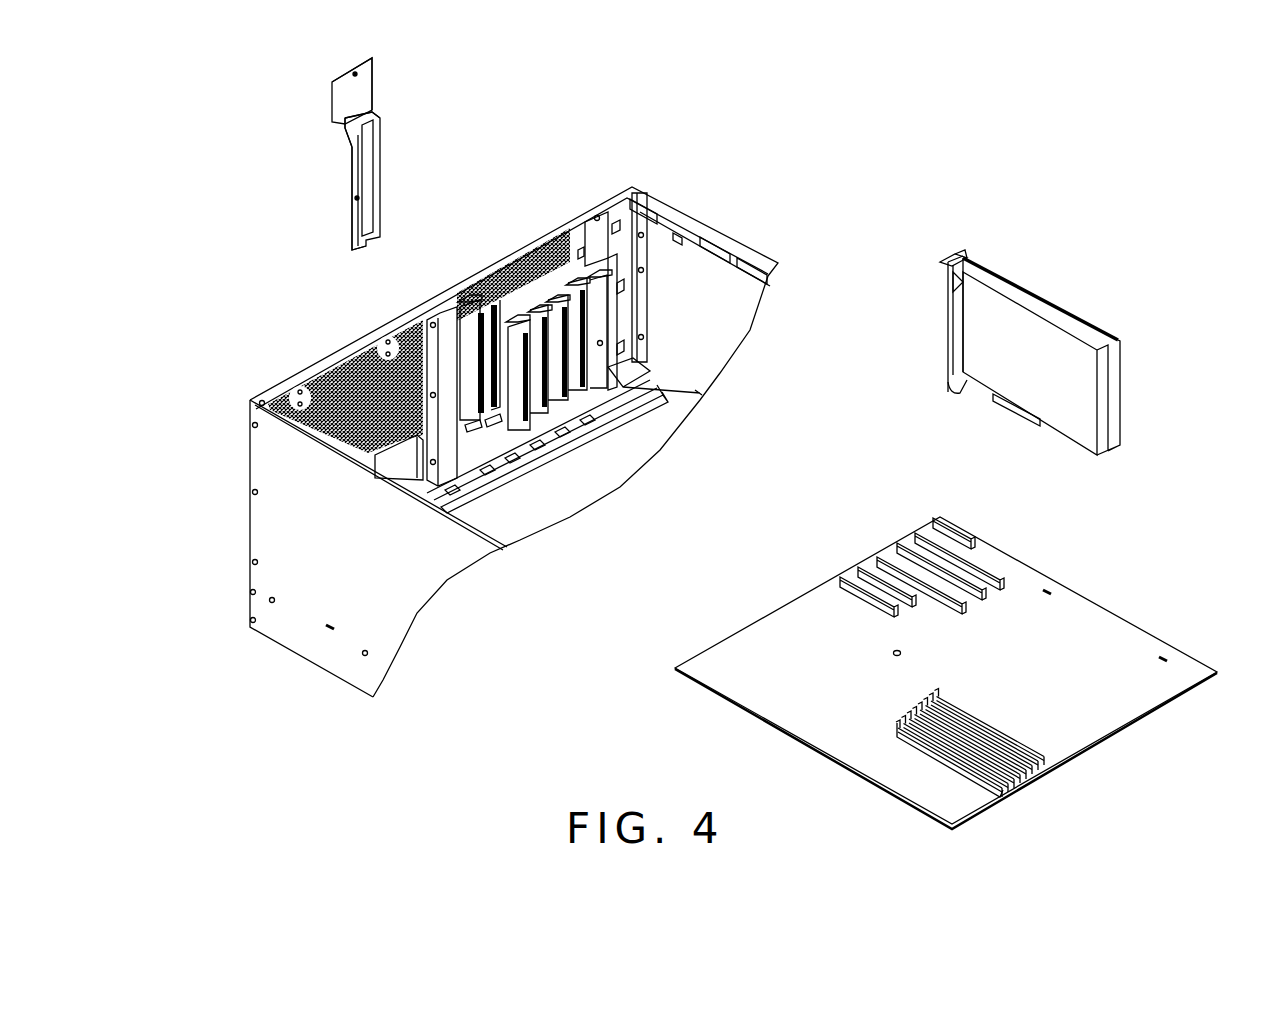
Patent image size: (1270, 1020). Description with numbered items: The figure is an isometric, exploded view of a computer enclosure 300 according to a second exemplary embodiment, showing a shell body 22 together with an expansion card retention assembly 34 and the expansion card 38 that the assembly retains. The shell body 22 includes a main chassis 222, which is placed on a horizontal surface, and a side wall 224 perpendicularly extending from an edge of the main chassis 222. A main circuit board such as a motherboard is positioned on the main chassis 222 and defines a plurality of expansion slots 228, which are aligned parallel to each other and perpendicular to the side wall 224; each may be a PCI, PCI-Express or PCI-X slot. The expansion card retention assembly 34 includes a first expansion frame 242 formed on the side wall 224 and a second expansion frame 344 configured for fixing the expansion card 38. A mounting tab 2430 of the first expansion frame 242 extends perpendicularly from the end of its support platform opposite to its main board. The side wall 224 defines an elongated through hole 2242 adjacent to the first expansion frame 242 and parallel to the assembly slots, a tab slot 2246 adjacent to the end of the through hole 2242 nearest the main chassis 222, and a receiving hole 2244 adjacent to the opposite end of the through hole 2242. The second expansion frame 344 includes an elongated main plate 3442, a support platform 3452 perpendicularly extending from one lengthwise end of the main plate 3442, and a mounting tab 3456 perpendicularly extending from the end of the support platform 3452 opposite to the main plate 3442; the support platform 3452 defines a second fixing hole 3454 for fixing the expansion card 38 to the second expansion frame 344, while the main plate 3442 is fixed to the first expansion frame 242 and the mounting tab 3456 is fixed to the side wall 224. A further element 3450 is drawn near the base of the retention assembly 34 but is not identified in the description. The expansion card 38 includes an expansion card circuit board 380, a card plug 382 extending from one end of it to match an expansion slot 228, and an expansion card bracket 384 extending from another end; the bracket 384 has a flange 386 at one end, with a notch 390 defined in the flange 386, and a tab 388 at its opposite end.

The computer enclosure 300 is at (666, 84).
The shell body 22 is at (727, 293).
The main chassis 222 is at (590, 470).
The side wall 224 is at (523, 250).
The elongated through hole 2242 is at (632, 187).
The receiving hole 2244 is at (597, 214).
The tab slot 2246 is at (633, 380).
The mounting tab 2430 is at (603, 343).
The expansion slots 228 is at (970, 547).
The expansion card retention assembly 34 is at (214, 246).
The second expansion frame 344 is at (325, 247).
The first expansion frame 242 is at (398, 283).
The elongated main plate 3442 is at (357, 180).
The retaining bar 3450 is at (617, 385).
The support platform 3452 is at (350, 120).
The second fixing hole 3454 is at (367, 110).
The mounting tab 3456 is at (342, 88).
The expansion card 38 is at (995, 323).
The expansion card circuit board 380 is at (1017, 318).
The card plug 382 is at (1017, 408).
The expansion card bracket 384 is at (953, 273).
The flange 386 is at (952, 252).
The tab 388 is at (958, 390).
The notch 390 is at (963, 254).